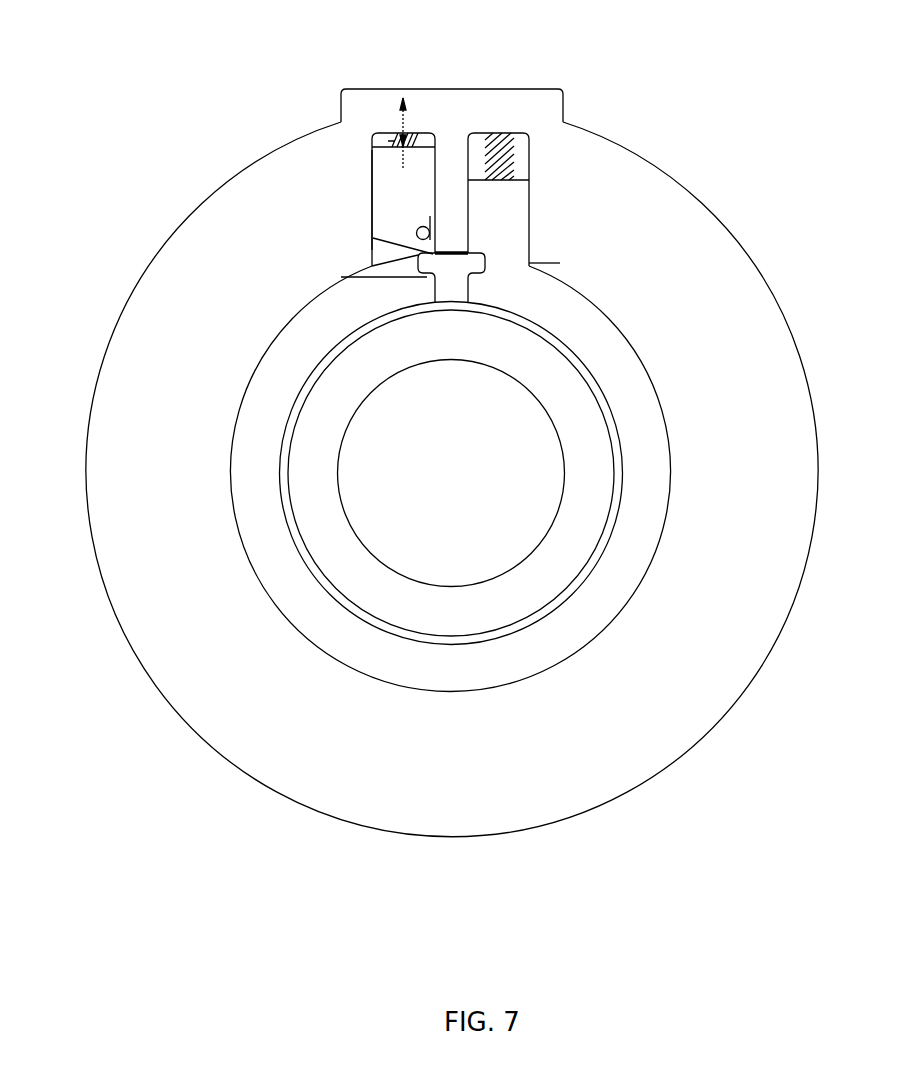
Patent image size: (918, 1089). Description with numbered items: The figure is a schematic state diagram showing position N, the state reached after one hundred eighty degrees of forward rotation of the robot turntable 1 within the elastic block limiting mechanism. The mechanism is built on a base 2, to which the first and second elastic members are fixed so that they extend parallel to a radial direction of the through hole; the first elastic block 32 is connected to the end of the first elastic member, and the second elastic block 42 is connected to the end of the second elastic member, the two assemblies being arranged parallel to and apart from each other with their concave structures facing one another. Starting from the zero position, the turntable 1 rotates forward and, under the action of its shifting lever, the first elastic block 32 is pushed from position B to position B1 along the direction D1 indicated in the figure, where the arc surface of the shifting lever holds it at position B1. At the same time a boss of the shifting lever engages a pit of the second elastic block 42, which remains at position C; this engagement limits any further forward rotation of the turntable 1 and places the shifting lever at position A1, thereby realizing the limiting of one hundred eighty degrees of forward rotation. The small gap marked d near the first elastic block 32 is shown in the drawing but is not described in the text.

The turntable 1 is at (325, 540).
The base 2 is at (312, 770).
The first elastic block 32 is at (390, 172).
The second elastic block 42 is at (522, 190).
The direction D1 is at (390, 112).
The position B1 is at (372, 197).
The position A1 is at (341, 277).
The position C is at (560, 263).
The gap d is at (424, 228).